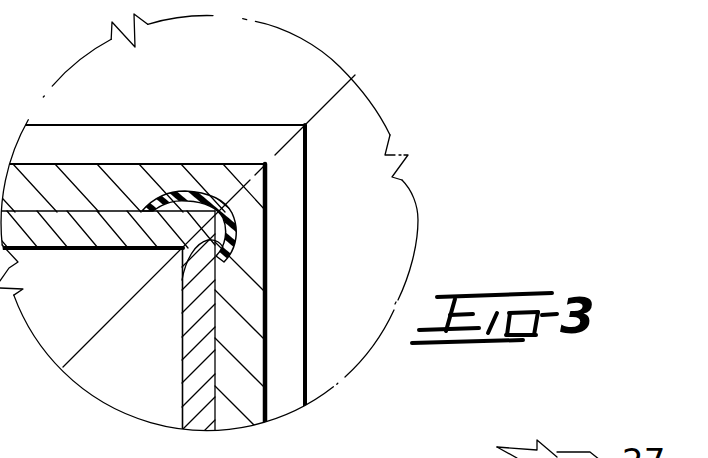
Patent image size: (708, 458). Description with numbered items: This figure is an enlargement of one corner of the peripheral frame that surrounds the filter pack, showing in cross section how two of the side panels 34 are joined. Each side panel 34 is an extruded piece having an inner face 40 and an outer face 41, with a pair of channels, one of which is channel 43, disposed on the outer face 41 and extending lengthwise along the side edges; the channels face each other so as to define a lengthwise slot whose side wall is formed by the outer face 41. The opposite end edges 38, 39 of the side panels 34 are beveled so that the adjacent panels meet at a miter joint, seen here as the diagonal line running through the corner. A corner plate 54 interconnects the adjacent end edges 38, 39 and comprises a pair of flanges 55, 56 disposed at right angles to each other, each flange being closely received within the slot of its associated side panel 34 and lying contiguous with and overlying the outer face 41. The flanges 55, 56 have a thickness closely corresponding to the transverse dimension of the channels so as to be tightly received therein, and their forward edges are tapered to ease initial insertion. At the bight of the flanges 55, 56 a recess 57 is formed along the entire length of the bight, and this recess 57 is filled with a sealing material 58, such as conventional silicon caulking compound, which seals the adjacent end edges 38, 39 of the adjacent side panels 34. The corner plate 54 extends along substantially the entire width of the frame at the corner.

The side panel 34 is at (97, 378).
The end edge 38 is at (367, 100).
The end edge 39 is at (368, 100).
The inner face 40 is at (84, 249).
The outer face 41 is at (77, 208).
The channel 43 is at (133, 171).
The corner plate 54 is at (290, 200).
The flange 55 is at (181, 161).
The flange 56 is at (265, 315).
The recess 57 is at (232, 227).
The sealing material 58 is at (172, 280).